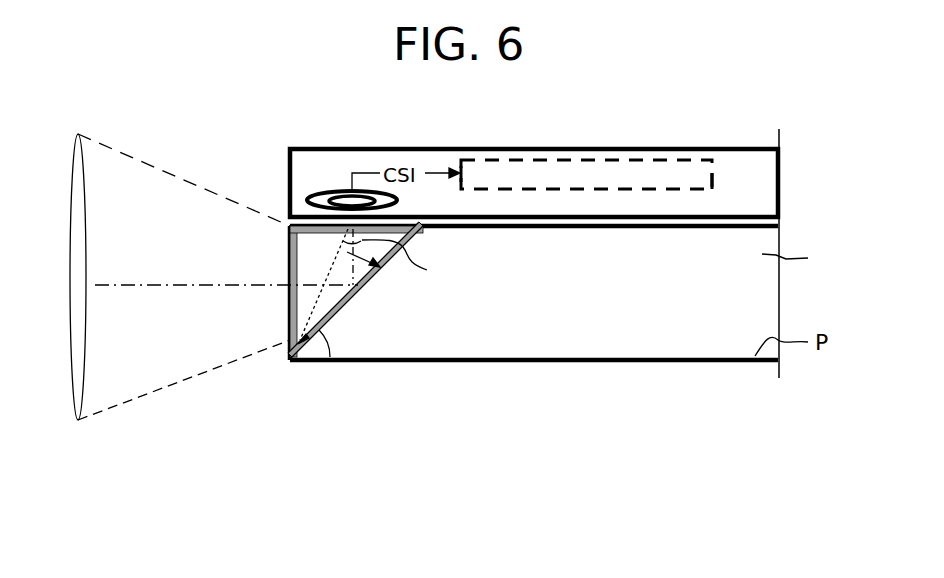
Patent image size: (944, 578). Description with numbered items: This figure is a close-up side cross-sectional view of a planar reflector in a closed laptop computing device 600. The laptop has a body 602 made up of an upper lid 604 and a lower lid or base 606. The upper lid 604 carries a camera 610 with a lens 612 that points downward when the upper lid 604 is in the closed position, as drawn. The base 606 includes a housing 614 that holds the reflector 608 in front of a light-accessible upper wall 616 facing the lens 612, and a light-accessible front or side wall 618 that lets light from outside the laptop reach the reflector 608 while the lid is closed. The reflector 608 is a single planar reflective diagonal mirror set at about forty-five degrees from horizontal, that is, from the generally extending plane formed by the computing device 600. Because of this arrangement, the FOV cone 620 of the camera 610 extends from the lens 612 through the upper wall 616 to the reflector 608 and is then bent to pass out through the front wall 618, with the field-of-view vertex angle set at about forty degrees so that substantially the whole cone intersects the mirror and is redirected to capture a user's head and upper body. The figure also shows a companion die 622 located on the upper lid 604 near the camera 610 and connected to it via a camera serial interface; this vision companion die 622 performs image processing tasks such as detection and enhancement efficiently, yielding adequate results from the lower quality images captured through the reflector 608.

The computing device 600 is at (352, 70).
The body 602 is at (517, 147).
The upper lid 604 is at (733, 148).
The base 606 is at (608, 363).
The reflector 608 is at (350, 300).
The camera 610 is at (345, 196).
The lens 612 is at (334, 192).
The housing 614 is at (730, 361).
The upper wall 616 is at (306, 233).
The front wall 618 is at (290, 329).
The FOV cone 620 is at (197, 352).
The companion die 622 is at (590, 160).